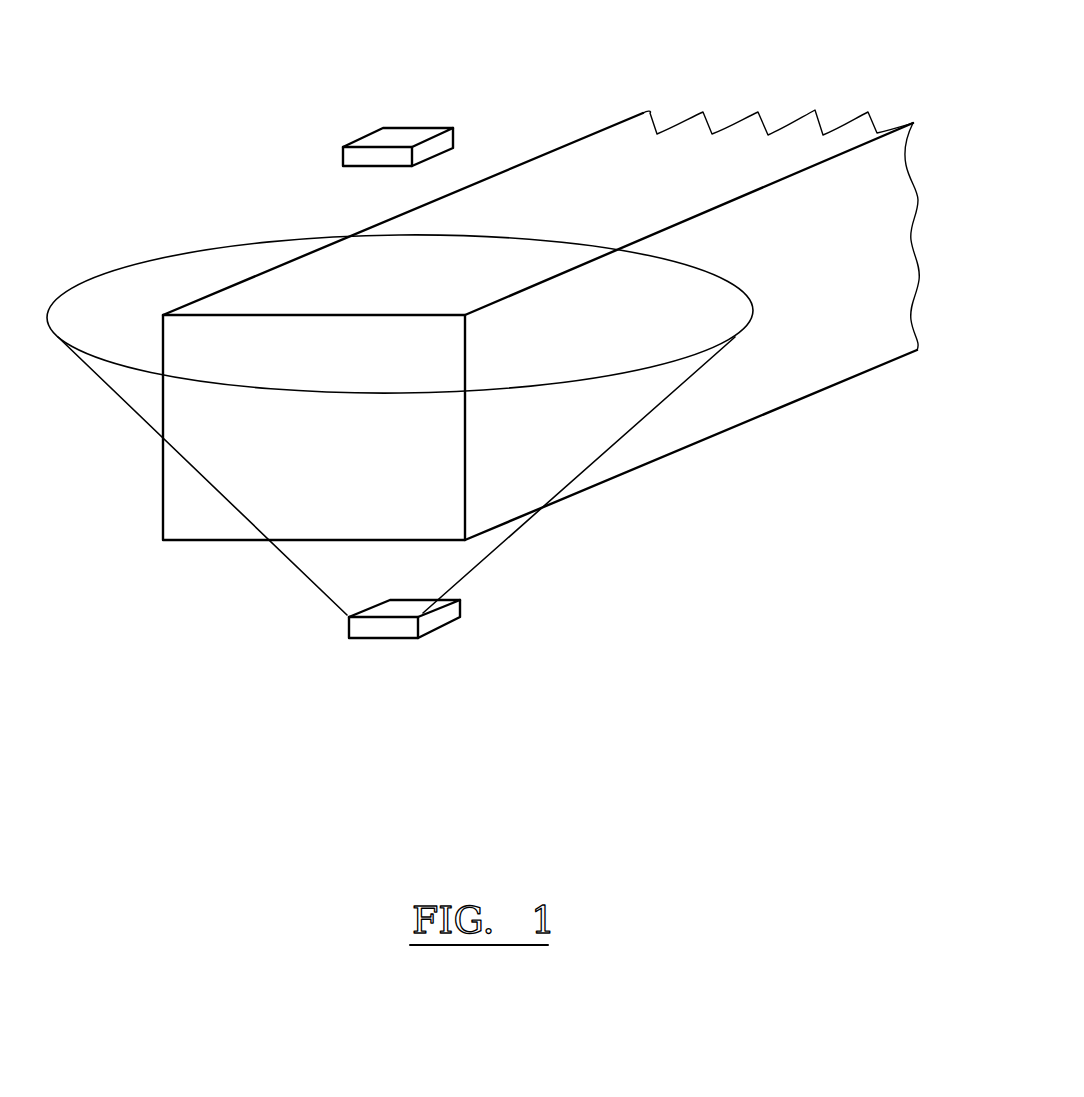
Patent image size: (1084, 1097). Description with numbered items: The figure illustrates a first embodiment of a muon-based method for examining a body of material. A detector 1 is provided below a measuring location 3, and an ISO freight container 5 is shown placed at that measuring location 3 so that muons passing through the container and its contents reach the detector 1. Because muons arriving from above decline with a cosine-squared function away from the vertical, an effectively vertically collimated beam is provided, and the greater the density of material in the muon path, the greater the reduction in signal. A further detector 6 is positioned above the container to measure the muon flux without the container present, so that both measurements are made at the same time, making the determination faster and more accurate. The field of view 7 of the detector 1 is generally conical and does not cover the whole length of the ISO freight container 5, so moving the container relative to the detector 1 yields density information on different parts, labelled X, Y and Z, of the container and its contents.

The detector 1 is at (400, 627).
The measuring location 3 is at (572, 527).
The ISO freight container 5 is at (768, 380).
The further detector 6 is at (400, 135).
The field of view 7 is at (125, 407).